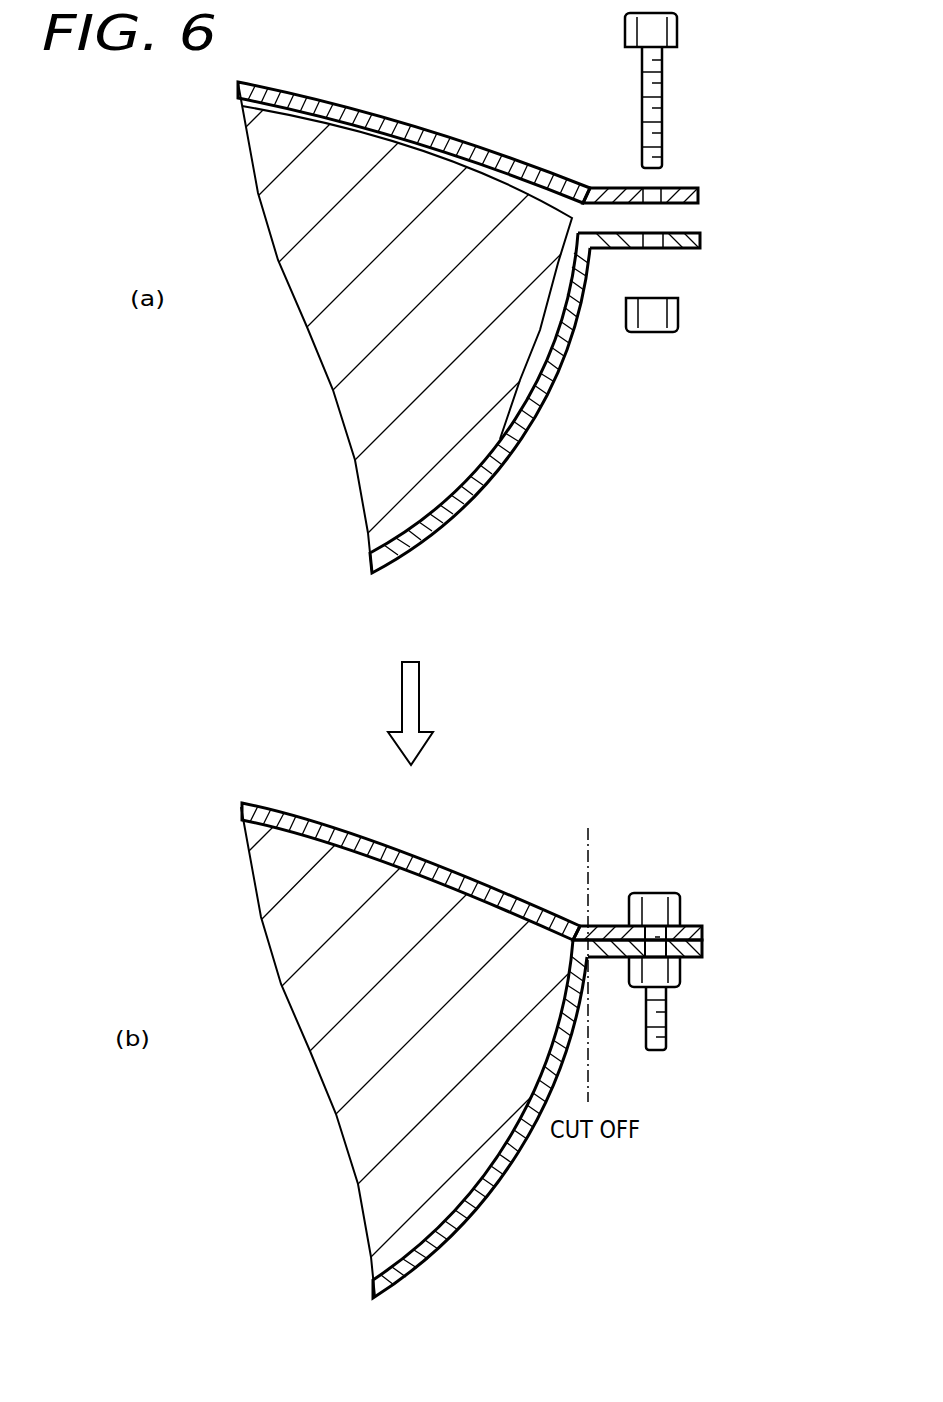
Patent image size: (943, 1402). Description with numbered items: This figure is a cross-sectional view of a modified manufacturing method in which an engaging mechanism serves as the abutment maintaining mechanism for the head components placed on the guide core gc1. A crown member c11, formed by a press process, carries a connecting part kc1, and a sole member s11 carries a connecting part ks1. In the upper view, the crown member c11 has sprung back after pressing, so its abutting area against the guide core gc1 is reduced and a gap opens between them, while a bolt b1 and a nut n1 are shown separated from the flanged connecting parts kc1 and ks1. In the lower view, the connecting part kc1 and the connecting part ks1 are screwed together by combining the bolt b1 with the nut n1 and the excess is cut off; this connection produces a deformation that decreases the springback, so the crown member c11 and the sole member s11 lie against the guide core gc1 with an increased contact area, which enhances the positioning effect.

The crown member c11 is at (308, 98).
The sole member s11 is at (433, 523).
The guide core gc1 is at (335, 351).
The bolt b1 is at (655, 80).
The connecting part kc1 is at (683, 187).
The connecting part ks1 is at (690, 244).
The nut n1 is at (653, 323).